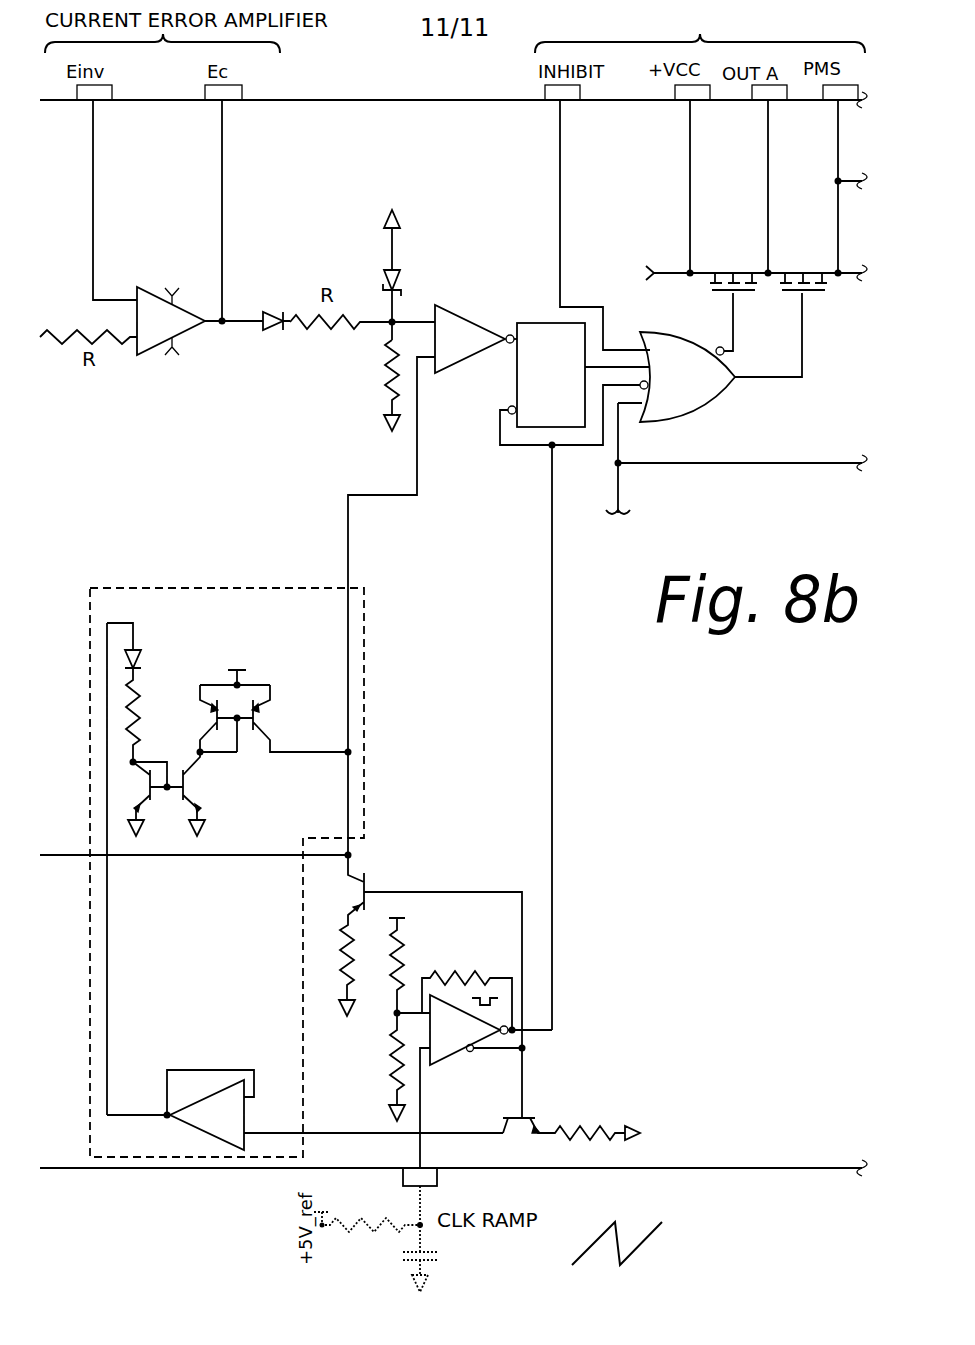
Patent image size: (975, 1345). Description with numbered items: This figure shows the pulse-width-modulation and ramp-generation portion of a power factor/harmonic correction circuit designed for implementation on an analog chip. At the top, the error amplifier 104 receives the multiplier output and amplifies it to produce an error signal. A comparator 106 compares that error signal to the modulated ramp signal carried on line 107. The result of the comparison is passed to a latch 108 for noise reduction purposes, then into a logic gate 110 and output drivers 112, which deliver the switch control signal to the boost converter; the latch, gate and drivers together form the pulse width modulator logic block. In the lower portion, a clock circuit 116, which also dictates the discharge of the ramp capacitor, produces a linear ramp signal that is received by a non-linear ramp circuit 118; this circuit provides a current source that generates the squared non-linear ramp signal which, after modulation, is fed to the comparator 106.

The error amplifier 104 is at (242, 290).
The comparator 106 is at (472, 312).
The line 107 is at (348, 540).
The latch 108 is at (514, 408).
The logic gate 110 is at (722, 398).
The output drivers 112 is at (627, 247).
The clock circuit 116 is at (675, 952).
The non-linear ramp circuit 118 is at (262, 588).